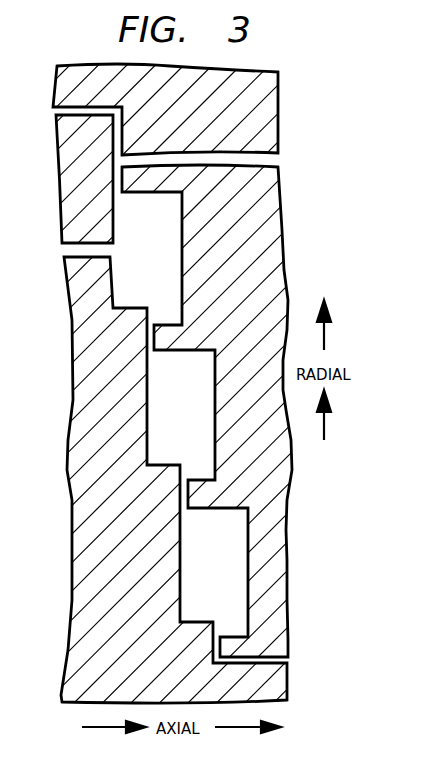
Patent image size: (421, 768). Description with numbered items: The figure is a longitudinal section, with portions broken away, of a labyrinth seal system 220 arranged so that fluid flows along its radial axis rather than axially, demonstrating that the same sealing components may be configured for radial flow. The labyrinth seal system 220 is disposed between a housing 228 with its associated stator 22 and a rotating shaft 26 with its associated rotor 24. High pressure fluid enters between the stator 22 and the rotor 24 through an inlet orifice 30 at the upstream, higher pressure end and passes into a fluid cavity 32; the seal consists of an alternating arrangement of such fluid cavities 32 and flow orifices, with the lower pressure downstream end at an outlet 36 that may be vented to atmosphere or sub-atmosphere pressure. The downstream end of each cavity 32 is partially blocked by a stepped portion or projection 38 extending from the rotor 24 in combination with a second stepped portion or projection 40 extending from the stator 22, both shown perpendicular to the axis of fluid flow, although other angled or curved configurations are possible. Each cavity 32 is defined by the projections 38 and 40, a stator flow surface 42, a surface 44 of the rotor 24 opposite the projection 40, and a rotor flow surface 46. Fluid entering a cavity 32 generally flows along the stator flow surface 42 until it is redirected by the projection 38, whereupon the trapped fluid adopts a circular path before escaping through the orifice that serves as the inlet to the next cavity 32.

The stator 22 is at (285, 213).
The rotor 24 is at (78, 396).
The rotating shaft 26 is at (284, 682).
The inlet orifice 30 is at (121, 197).
The fluid cavity 32 is at (177, 262).
The outlet 36 is at (222, 637).
The stepped portion or projection 38 is at (139, 307).
The second stepped portion or projection 40 is at (163, 324).
The stator flow surface 42 is at (180, 282).
The surface opposite projection 44 is at (168, 194).
The rotor flow surface 46 is at (113, 270).
The labyrinth seal system 220 is at (288, 124).
The housing 228 is at (86, 68).